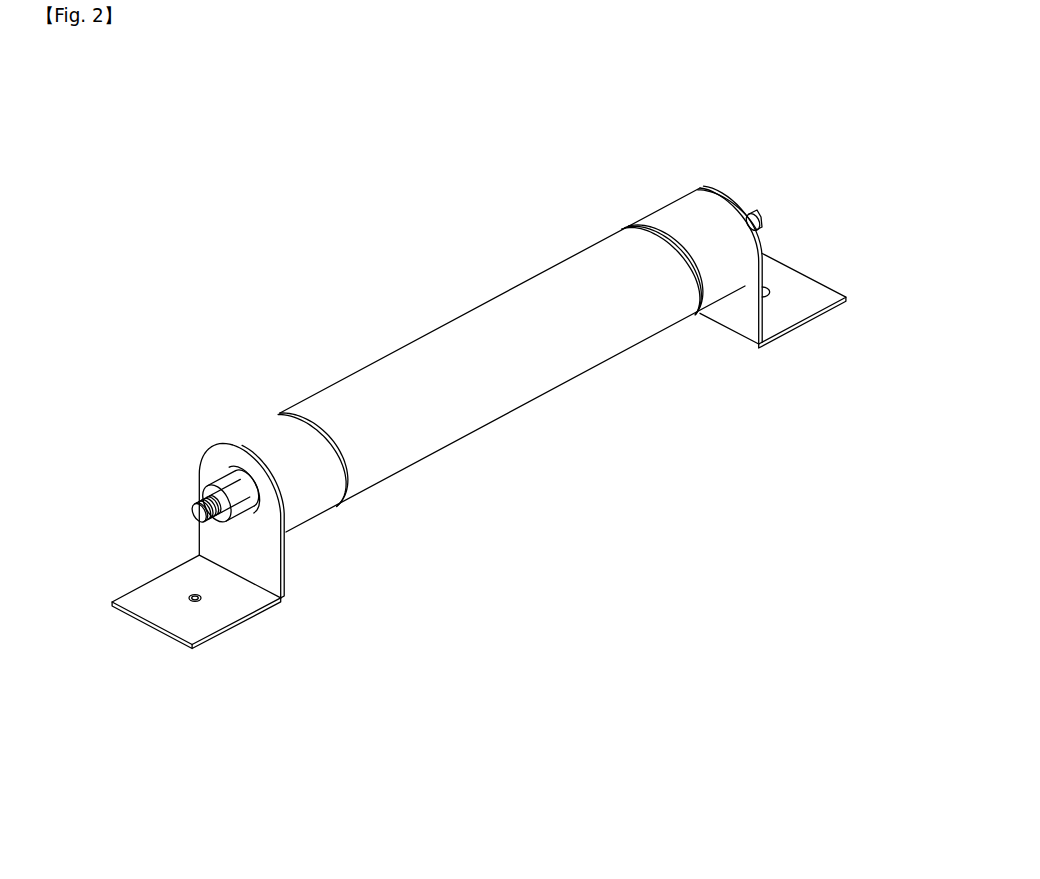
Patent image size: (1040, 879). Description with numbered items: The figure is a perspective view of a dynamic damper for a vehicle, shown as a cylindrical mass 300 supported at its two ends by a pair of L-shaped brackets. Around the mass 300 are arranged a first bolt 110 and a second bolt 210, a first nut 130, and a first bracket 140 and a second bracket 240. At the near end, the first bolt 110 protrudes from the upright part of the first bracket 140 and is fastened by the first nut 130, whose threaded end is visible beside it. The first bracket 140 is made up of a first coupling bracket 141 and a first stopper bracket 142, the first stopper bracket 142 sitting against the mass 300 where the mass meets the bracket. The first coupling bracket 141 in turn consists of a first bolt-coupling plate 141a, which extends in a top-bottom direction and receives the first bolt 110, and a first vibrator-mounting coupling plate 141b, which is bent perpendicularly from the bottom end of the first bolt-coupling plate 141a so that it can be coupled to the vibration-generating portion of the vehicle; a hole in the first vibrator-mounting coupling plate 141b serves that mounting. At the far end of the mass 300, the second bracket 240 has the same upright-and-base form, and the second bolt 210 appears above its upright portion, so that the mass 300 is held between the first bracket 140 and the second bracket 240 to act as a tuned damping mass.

The first bolt 110 is at (197, 507).
The first nut 130 is at (188, 441).
The first bracket 140 is at (233, 547).
The first coupling bracket 141 is at (233, 626).
The first bolt-coupling plate 141a is at (267, 563).
The first vibrator-mounting coupling plate 141b is at (196, 654).
The first stopper bracket 142 is at (307, 505).
The second bolt 210 is at (749, 207).
The second bracket 240 is at (709, 338).
The mass 300 is at (517, 418).